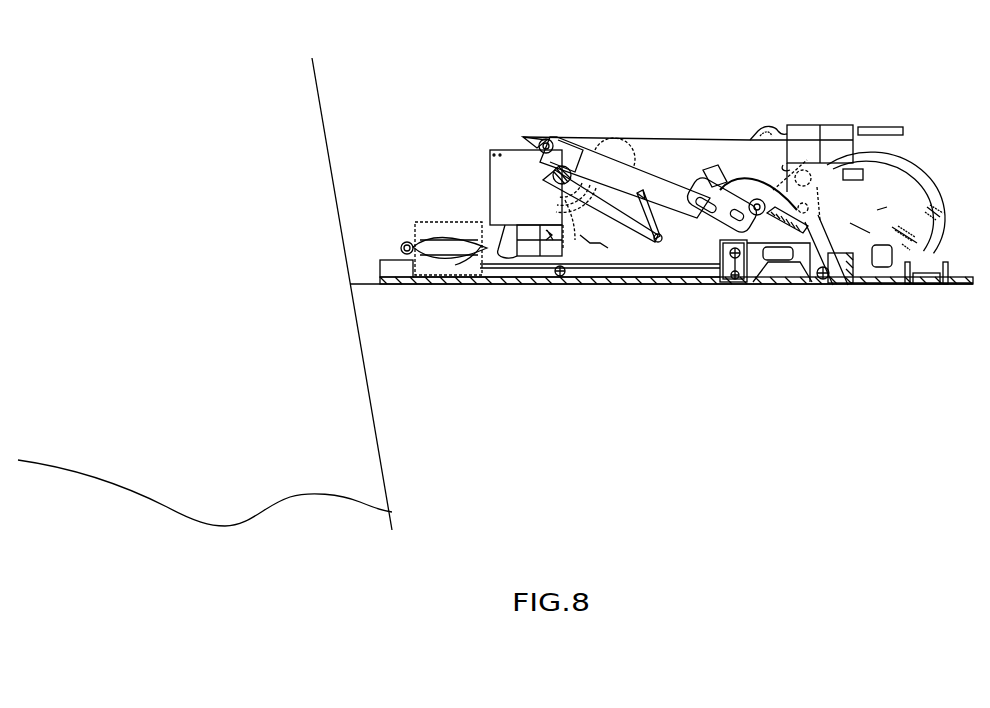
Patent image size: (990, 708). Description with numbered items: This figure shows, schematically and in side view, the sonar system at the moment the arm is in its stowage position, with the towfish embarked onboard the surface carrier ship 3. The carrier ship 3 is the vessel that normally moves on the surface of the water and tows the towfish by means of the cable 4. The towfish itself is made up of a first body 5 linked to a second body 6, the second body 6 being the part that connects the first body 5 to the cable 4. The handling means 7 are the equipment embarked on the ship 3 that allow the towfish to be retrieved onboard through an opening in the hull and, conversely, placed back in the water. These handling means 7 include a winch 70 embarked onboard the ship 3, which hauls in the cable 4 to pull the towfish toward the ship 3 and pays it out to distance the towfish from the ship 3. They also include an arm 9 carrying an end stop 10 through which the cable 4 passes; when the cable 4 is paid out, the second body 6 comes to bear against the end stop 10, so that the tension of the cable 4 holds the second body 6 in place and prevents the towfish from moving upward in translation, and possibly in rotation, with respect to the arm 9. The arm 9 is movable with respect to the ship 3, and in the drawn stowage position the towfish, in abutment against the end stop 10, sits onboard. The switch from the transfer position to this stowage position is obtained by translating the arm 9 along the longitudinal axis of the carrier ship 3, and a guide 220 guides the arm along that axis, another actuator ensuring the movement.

The surface carrier ship 3 is at (321, 124).
The cable 4 is at (688, 138).
The first body 5 is at (425, 221).
The second body 6 is at (598, 256).
The handling means 7 is at (678, 68).
The arm 9 is at (600, 138).
The end stop 10 is at (486, 228).
The winch 70 is at (868, 128).
The guide 220 is at (386, 268).